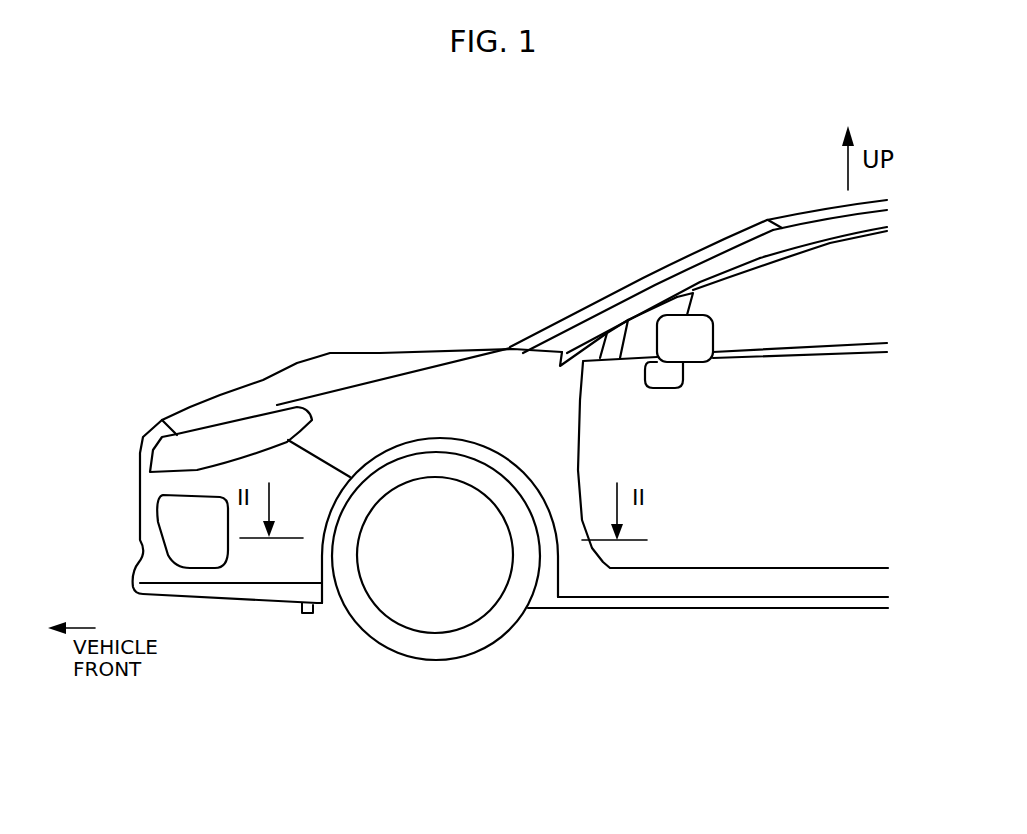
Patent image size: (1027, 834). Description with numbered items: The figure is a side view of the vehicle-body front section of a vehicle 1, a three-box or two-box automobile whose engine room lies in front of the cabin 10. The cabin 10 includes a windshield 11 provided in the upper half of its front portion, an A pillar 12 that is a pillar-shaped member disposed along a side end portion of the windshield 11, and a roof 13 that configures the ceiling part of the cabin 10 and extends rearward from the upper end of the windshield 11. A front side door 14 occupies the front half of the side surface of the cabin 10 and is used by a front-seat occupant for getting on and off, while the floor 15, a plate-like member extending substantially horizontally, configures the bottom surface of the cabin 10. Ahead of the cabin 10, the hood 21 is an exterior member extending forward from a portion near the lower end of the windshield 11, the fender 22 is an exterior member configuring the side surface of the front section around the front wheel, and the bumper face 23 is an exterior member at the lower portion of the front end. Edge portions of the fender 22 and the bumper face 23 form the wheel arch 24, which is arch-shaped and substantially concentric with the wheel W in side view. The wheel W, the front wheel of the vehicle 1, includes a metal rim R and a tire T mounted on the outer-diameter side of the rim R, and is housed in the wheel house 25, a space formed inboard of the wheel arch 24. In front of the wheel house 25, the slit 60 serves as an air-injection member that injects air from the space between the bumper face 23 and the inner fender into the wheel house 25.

The vehicle 1 is at (122, 199).
The cabin 10 is at (618, 250).
The windshield 11 is at (665, 267).
The A pillar 12 is at (720, 258).
The roof 13 is at (815, 208).
The front side door 14 is at (795, 498).
The floor 15 is at (747, 610).
The hood 21 is at (317, 358).
The fender 22 is at (372, 420).
The bumper face 23 is at (270, 567).
The wheel arch 24 is at (411, 446).
The wheel house 25 is at (541, 598).
The slit 60 is at (305, 615).
The tire T is at (397, 655).
The rim R is at (427, 620).
The wheel W is at (445, 665).